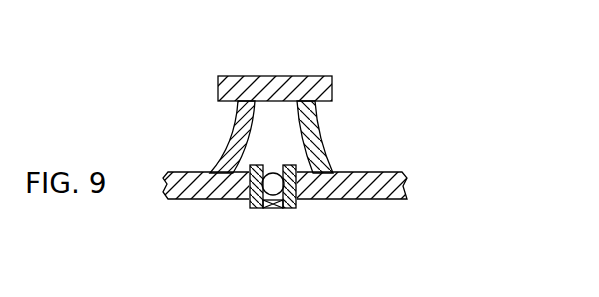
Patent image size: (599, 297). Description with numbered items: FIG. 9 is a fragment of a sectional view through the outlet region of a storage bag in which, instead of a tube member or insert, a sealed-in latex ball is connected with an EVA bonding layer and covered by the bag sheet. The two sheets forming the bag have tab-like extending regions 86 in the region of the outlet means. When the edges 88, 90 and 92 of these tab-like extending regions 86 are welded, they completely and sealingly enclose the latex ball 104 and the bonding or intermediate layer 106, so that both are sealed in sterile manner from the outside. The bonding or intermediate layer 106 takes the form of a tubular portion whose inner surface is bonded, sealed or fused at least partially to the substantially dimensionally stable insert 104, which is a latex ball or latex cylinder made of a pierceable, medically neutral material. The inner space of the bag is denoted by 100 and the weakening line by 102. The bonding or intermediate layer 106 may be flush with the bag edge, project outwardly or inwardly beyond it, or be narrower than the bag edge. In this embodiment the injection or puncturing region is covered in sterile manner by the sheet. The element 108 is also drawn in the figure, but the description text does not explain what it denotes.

The support assembly 86 is at (340, 148).
The left support leg 88 is at (230, 128).
The base plate 90 is at (337, 171).
The top plate 92 is at (283, 75).
The right support leg 100 is at (299, 132).
The top plate body 102 is at (296, 94).
The ball 104 is at (265, 210).
The left retaining block 106 is at (252, 207).
The right retaining block 108 is at (284, 212).